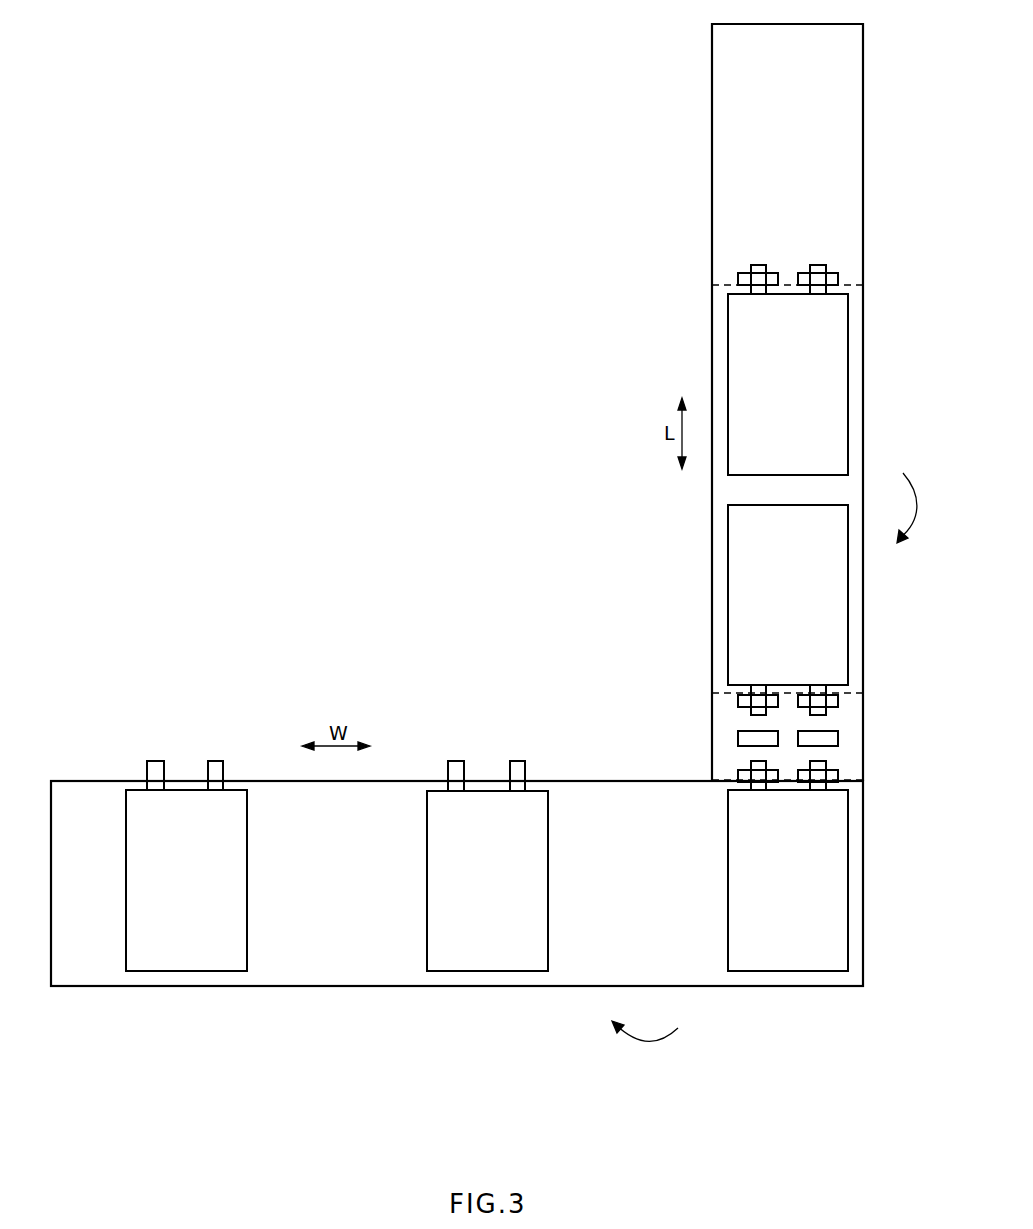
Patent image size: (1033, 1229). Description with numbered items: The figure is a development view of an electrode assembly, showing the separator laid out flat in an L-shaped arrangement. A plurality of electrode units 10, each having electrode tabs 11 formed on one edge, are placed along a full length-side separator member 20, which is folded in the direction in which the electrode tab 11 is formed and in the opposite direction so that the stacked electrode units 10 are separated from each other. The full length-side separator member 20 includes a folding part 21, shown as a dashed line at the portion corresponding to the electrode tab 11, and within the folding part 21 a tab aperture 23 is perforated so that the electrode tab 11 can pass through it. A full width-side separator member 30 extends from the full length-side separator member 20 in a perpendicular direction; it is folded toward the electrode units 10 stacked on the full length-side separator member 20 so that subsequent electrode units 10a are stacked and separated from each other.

The electrode unit 10 is at (848, 383).
The electrode unit 10a is at (486, 971).
The electrode tab 11 is at (757, 265).
The full length-side separator member 20 is at (863, 143).
The folding part 21 is at (850, 285).
The tab aperture 23 is at (738, 285).
The full width-side separator member 30 is at (79, 781).